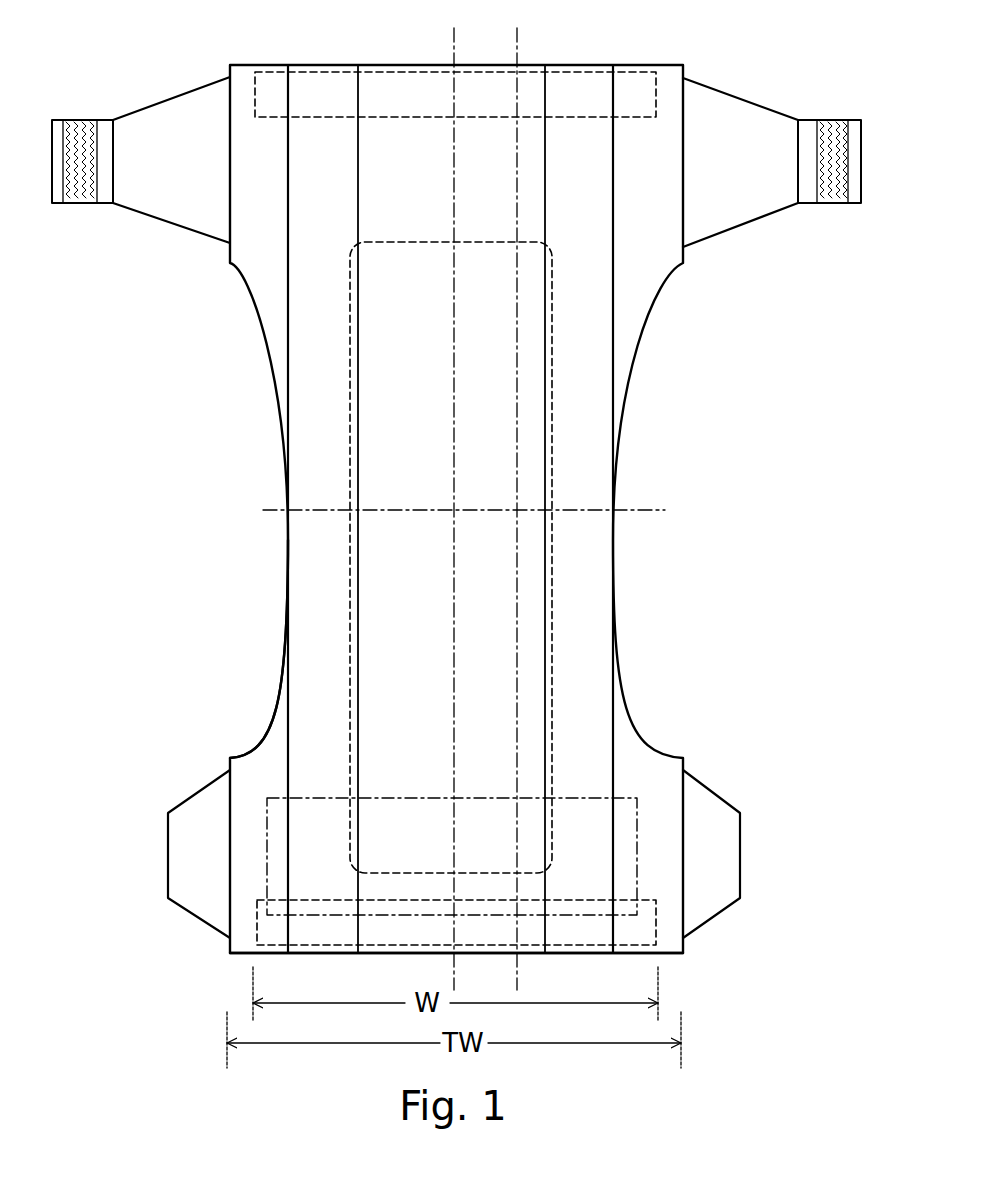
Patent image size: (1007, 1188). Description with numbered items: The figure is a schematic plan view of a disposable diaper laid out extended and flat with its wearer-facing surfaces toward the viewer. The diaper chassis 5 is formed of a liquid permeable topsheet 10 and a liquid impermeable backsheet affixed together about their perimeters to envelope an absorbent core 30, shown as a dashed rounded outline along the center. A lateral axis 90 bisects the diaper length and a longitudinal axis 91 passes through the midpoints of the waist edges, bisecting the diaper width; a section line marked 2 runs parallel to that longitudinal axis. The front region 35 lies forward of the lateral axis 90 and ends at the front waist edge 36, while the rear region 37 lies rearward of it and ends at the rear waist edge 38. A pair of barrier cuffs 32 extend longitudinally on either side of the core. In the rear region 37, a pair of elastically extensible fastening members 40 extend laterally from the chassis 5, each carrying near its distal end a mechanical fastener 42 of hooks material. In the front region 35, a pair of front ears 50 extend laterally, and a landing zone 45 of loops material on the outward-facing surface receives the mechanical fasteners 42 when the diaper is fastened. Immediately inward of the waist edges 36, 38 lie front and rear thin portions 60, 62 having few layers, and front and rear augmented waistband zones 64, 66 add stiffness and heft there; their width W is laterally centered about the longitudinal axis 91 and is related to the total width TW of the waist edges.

The disposable diaper chassis 5 is at (466, 509).
The liquid permeable topsheet 10 is at (400, 417).
The absorbent core 30 is at (350, 427).
The barrier cuffs 32 is at (545, 195).
The front region 35 is at (395, 697).
The front waist edge 36 is at (368, 955).
The rear region 37 is at (395, 317).
The rear waist edge 38 is at (355, 65).
The fastening members 40 is at (175, 228).
The mechanical fastener 42 is at (73, 205).
The landing zone 45 is at (320, 793).
The front ears 50 is at (192, 907).
The front thin portion 60 is at (312, 890).
The rear thin portion 62 is at (589, 147).
The front augmented waistband zone 64 is at (632, 932).
The rear augmented waistband zone 66 is at (577, 97).
The lateral axis 90 is at (273, 513).
The longitudinal axis 91 is at (454, 52).
The section line 2 is at (522, 50).